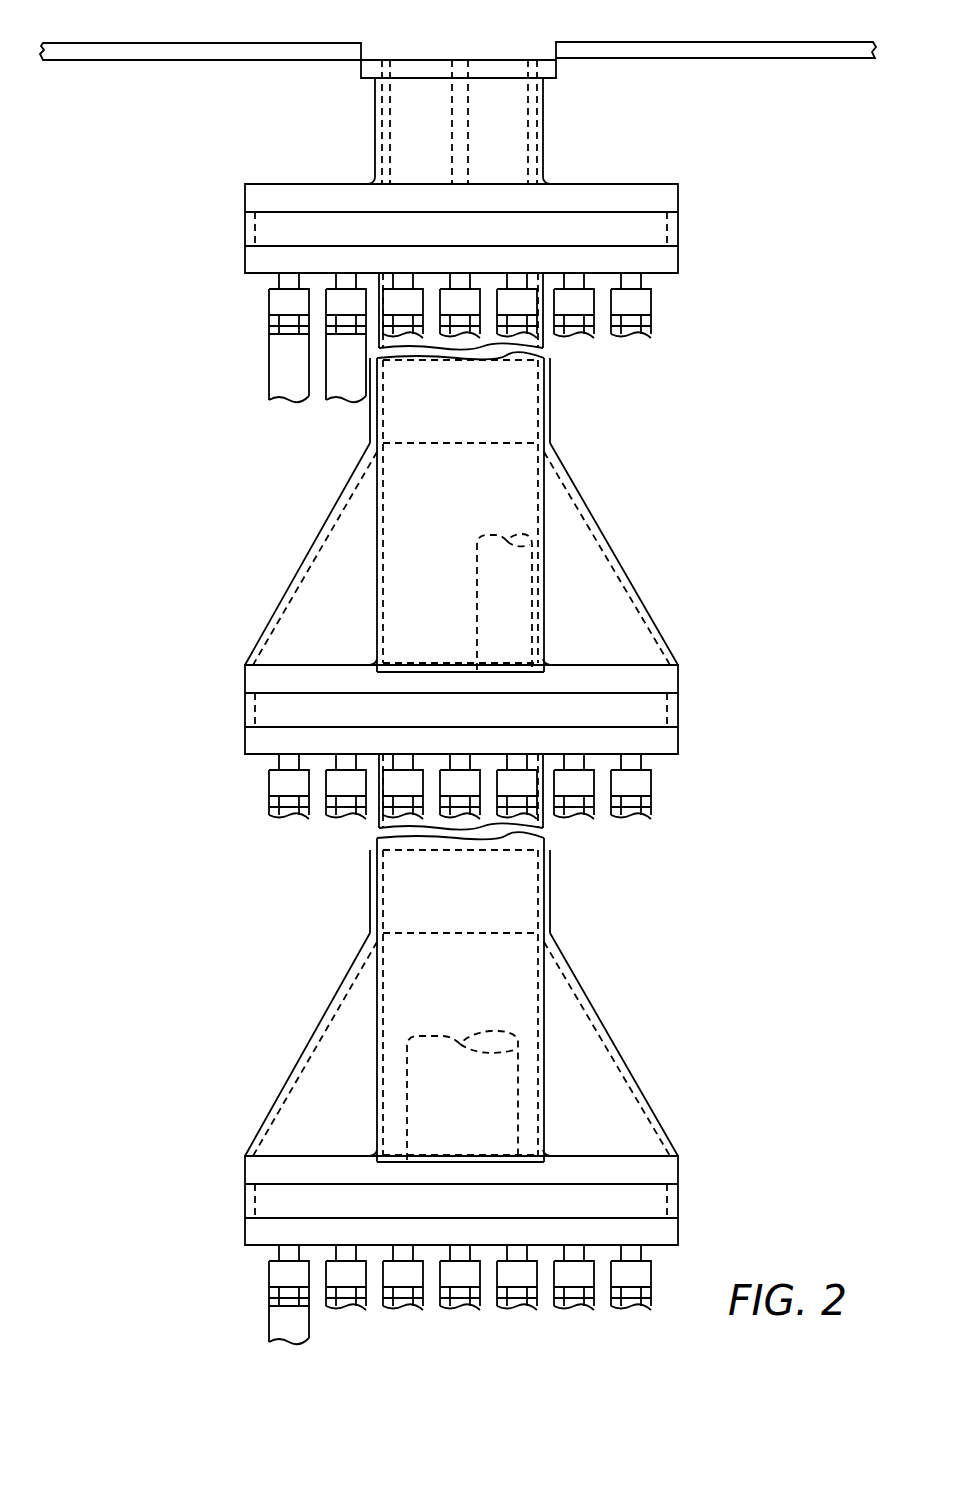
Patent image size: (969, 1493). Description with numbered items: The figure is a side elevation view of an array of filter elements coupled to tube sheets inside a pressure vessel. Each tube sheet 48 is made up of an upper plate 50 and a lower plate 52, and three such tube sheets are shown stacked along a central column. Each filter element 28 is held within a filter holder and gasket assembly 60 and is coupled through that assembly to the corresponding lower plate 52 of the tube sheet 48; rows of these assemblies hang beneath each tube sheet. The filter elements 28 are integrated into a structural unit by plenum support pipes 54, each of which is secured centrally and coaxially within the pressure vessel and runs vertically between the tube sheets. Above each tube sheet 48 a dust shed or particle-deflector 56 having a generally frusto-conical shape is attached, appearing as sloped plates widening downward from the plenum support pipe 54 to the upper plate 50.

The tube sheet 48 is at (660, 42).
The plenum support pipe 54 is at (547, 137).
The dust shed or particle-deflector 56 is at (311, 548).
The upper plate 50 is at (245, 200).
The lower plate 52 is at (245, 262).
The filter holder and gasket assembly 60 is at (269, 300).
The filter element 28 is at (276, 364).